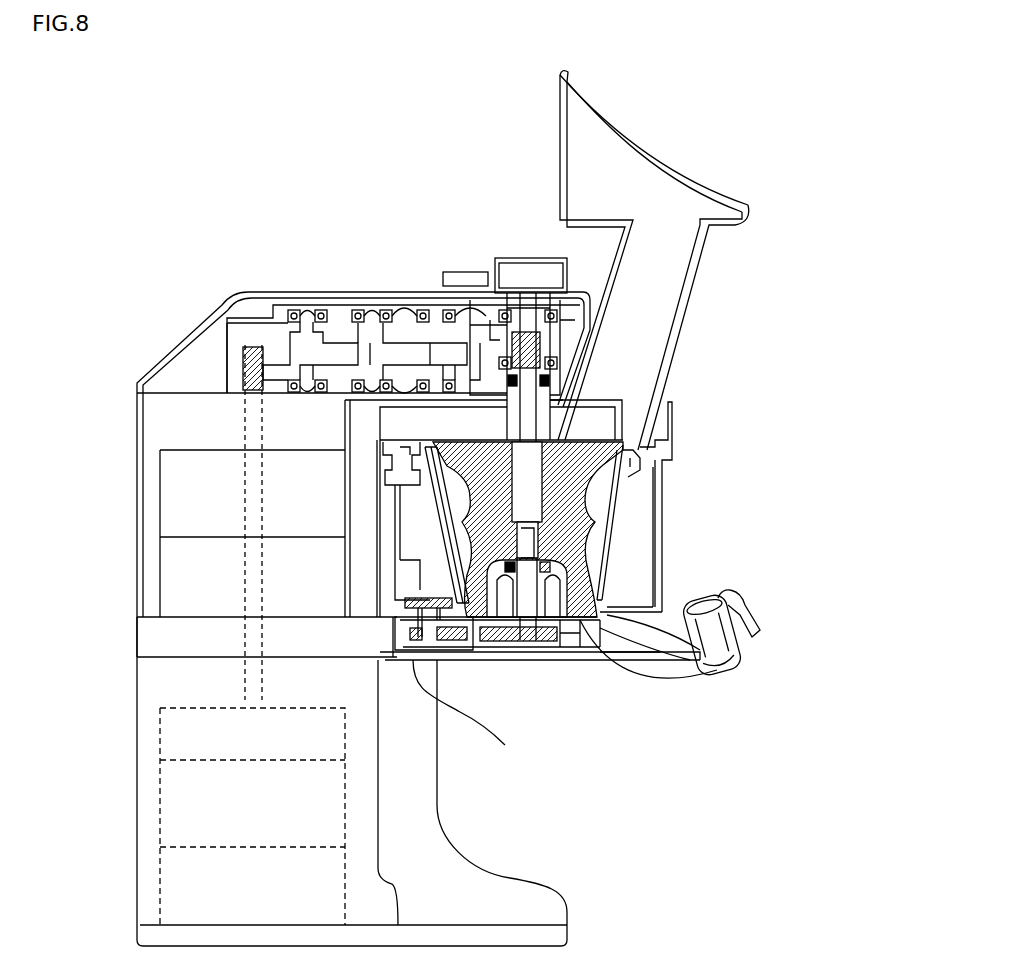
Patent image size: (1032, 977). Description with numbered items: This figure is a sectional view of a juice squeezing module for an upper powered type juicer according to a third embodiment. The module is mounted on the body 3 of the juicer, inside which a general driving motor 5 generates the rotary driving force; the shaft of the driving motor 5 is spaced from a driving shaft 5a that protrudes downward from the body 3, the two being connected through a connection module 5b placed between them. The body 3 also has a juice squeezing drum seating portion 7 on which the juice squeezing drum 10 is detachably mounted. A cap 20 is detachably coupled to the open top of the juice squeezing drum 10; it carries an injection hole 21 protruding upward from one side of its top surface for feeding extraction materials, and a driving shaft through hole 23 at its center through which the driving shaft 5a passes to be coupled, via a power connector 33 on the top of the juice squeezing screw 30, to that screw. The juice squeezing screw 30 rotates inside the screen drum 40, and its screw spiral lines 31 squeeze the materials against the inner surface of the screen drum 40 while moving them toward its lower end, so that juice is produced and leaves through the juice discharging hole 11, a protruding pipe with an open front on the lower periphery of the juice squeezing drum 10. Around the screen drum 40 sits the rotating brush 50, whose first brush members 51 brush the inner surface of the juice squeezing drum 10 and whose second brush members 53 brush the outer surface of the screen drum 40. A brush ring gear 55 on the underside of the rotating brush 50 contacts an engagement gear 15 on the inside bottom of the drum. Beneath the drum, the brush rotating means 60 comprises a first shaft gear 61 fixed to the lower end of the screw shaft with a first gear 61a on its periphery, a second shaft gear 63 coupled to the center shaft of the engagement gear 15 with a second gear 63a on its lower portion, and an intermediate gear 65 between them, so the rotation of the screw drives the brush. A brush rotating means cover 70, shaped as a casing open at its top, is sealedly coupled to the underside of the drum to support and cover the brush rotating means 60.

The driving motor 5 is at (215, 813).
The body 3 is at (137, 588).
The driving shaft 5a is at (522, 430).
The connection module 5b is at (372, 345).
The injection hole 21 is at (700, 262).
The driving shaft through hole 23 is at (545, 425).
The cap 20 is at (675, 420).
The power connector 33 is at (660, 452).
The juice squeezing screw 30 is at (605, 490).
The screw spiral lines 31 is at (610, 522).
The screen drum 40 is at (625, 540).
The juice squeezing drum 10 is at (670, 572).
The second brush members 53 is at (437, 482).
The rotating brush 50 is at (420, 528).
The first brush members 51 is at (417, 560).
The brush ring gear 55 is at (400, 600).
The engagement gear 15 is at (397, 625).
The second shaft gear 63 is at (445, 650).
The second gear 63a is at (427, 650).
The gear 65 is at (505, 650).
The first gear 61a is at (540, 652).
The first shaft gear 61 is at (580, 652).
The brush rotating means 60 is at (790, 800).
The juice discharging hole 11 is at (640, 655).
The juice squeezing drum seating portion 7 is at (720, 650).
The brush rotating means cover 70 is at (663, 660).